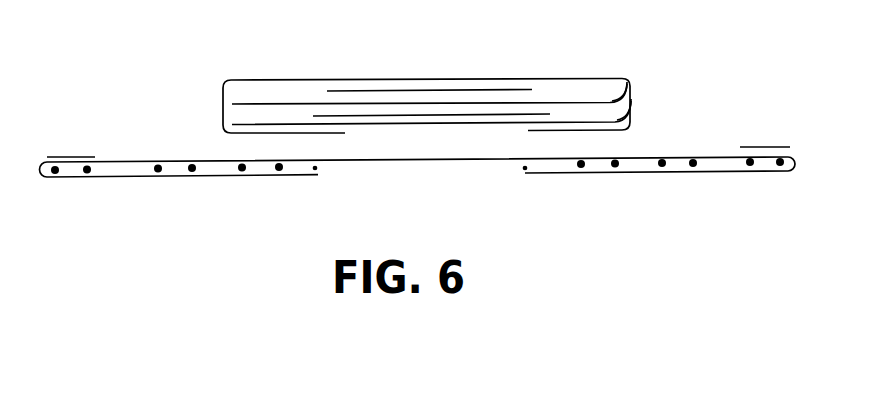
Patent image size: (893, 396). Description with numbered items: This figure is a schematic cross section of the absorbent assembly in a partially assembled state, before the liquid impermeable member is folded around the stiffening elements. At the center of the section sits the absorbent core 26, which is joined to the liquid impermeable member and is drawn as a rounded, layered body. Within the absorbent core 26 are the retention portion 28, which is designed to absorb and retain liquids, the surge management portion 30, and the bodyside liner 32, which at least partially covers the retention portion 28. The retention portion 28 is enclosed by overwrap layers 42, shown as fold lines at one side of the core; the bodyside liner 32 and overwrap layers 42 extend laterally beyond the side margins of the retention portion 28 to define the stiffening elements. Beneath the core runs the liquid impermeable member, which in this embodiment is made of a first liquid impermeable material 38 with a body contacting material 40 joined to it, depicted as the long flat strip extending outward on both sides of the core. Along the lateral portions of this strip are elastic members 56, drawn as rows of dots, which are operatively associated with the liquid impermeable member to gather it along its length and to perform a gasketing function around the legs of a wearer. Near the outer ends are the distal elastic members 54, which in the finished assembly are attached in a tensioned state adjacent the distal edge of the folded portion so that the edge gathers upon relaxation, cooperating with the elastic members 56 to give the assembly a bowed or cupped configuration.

The absorbent core 26 is at (589, 66).
The retention portion 28 is at (462, 113).
The surge management portion 30 is at (462, 90).
The bodyside liner 32 is at (262, 80).
The first liquid impermeable material 38 is at (425, 160).
The body contacting material 40 is at (618, 172).
The overwrap layers 42 is at (631, 99).
The distal elastic members 54 is at (88, 162).
The elastic members 56 is at (279, 160).